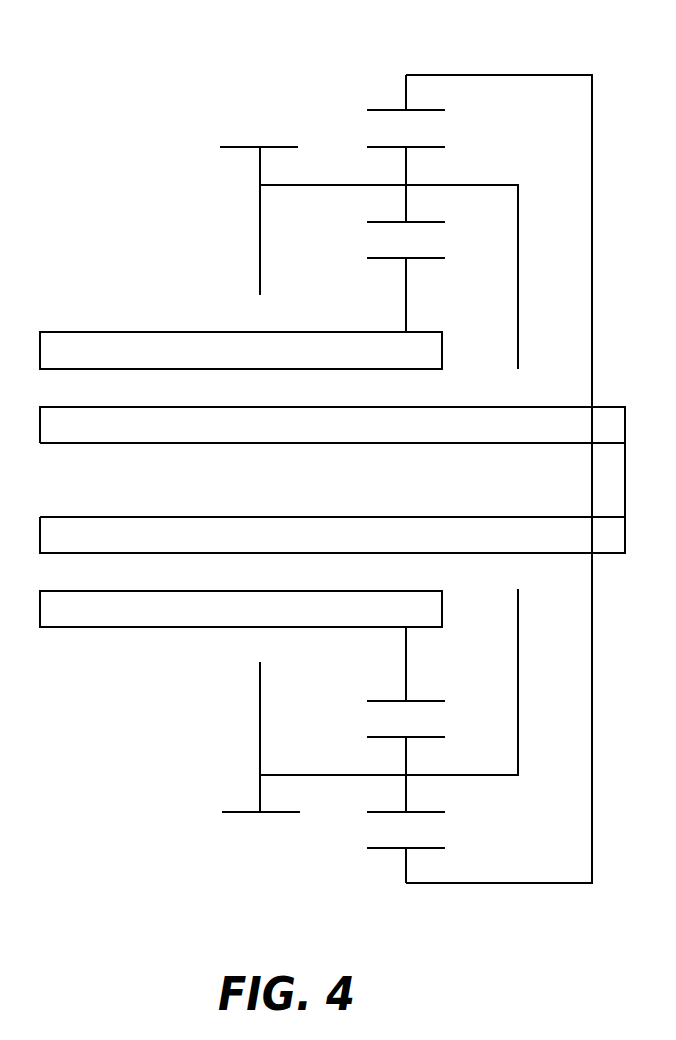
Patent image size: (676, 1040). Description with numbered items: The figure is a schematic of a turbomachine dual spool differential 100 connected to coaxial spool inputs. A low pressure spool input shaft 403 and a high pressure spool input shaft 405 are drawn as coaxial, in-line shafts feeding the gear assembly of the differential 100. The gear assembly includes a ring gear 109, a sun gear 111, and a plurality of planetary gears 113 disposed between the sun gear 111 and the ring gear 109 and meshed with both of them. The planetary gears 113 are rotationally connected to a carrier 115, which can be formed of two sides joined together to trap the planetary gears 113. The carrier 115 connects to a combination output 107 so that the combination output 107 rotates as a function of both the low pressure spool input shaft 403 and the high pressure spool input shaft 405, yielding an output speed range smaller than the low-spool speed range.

The turbomachine dual spool differential 100 is at (281, 72).
The combination output 107 is at (245, 147).
The ring gear 109 is at (515, 75).
The sun gear 111 is at (406, 317).
The planetary gears 113 is at (406, 173).
The carrier 115 is at (338, 185).
The input shaft 403 is at (288, 437).
The input shaft 405 is at (268, 363).